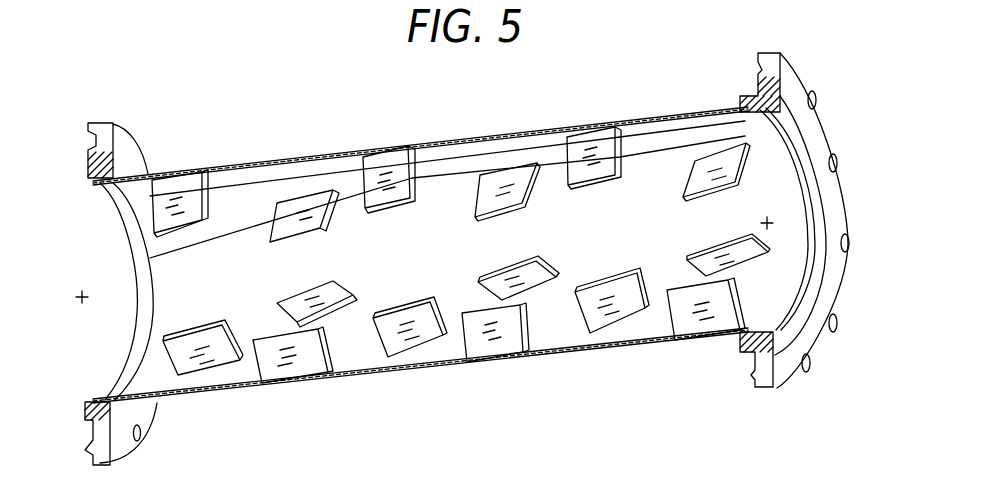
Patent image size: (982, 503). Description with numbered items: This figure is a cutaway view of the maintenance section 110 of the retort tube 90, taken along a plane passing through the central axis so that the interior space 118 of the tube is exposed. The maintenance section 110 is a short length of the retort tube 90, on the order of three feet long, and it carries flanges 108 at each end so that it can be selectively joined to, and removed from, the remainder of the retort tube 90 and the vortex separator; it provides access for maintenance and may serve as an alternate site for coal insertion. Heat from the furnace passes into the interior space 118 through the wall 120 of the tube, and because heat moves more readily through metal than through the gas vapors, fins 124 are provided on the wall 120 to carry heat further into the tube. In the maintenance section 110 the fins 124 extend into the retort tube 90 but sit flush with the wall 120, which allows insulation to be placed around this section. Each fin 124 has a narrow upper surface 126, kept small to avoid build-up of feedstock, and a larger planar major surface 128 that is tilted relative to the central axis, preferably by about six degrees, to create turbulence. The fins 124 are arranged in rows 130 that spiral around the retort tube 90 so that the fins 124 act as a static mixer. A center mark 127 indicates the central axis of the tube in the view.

The retort tube 90 is at (628, 89).
The flange 108 is at (157, 428).
The maintenance section 110 is at (455, 408).
The interior space 118 is at (126, 313).
The wall 120 is at (338, 274).
The fin 124 is at (300, 197).
The upper surface 126 is at (465, 213).
The axis mark 127 is at (80, 292).
The major surface 128 is at (376, 164).
The row 130 is at (125, 211).